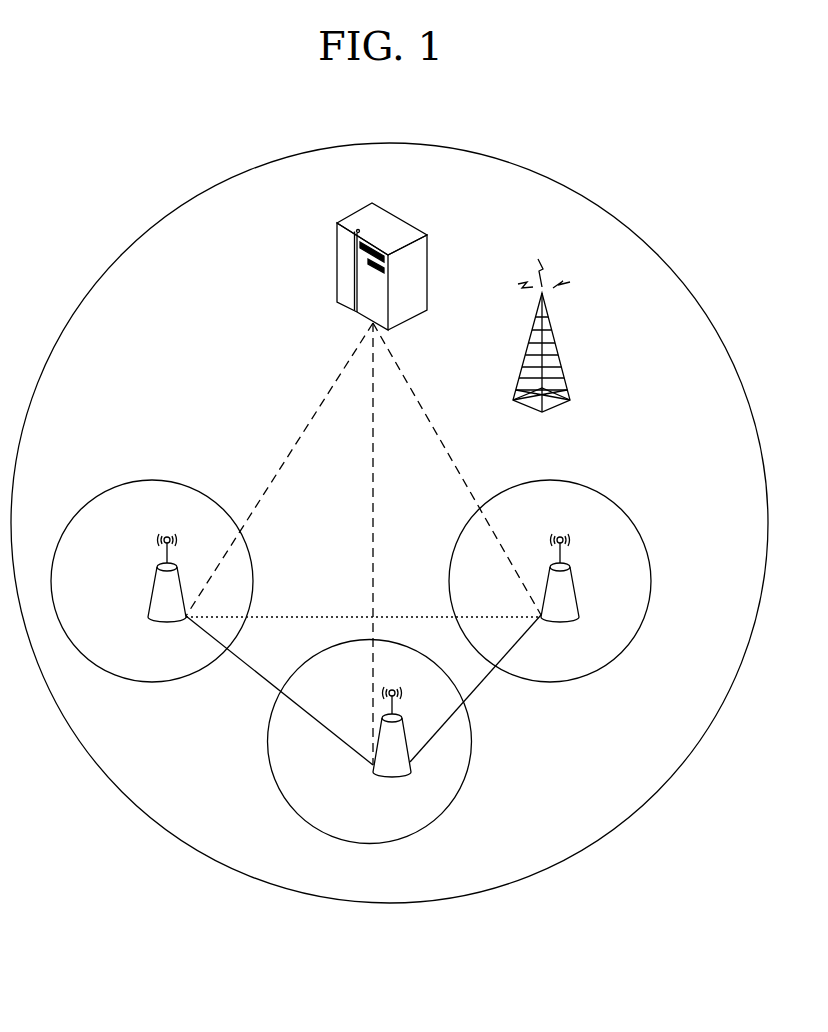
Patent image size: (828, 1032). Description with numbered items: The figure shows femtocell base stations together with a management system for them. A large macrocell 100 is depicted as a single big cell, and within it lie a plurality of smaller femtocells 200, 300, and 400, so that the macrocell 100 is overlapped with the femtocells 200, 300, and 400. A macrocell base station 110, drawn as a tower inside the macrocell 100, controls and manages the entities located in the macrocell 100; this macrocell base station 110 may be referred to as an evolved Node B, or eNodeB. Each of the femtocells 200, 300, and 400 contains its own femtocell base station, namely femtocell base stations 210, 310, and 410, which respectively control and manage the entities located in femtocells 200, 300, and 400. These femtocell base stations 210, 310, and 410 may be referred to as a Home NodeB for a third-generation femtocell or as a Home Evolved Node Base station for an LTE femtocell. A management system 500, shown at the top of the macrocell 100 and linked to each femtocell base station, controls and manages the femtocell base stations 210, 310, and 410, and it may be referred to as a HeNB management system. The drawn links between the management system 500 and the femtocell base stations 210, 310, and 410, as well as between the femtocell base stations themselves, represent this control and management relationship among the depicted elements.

The macrocell 100 is at (610, 213).
The macrocell base station 110 is at (563, 355).
The femtocell 200 is at (182, 483).
The femtocell base station 210 is at (156, 583).
The femtocell 300 is at (606, 494).
The femtocell base station 310 is at (574, 580).
The femtocell 400 is at (472, 740).
The femtocell base station 410 is at (403, 717).
The management system 500 is at (394, 214).